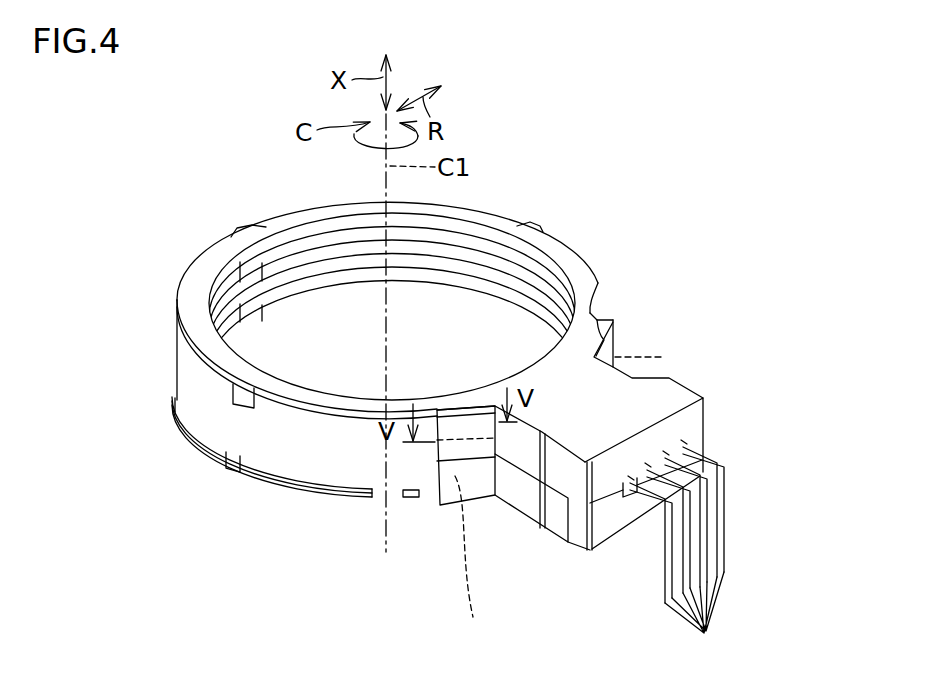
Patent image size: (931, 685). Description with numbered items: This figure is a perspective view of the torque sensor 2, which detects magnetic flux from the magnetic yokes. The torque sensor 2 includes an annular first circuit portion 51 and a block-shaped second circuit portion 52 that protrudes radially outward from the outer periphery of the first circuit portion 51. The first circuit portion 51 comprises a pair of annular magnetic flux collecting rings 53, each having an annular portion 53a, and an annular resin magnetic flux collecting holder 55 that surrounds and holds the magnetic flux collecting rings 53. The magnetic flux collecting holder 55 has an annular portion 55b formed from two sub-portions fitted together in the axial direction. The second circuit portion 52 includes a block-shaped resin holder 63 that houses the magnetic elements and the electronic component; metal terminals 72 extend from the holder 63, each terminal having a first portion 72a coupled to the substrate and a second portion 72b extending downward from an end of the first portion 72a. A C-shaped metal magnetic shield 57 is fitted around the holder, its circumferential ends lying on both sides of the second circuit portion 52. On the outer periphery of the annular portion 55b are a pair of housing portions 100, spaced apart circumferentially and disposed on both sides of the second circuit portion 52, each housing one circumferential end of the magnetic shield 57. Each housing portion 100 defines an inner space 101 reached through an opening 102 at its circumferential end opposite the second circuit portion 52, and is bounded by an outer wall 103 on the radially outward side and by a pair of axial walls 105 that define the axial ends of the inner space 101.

The torque sensor 2 is at (603, 193).
The first circuit portion 51 is at (385, 348).
The second circuit portion 52 is at (699, 474).
The magnetic flux collecting rings 53 is at (315, 290).
The annular portion 53a is at (276, 296).
The magnetic flux collecting holder 55 is at (490, 215).
The annular portion 55b is at (310, 392).
The magnetic shield 57 is at (267, 462).
The holder 63 is at (682, 426).
The terminals 72 is at (734, 554).
The first portion 72a is at (718, 468).
The second portion 72b is at (723, 620).
The housing portions 100 is at (617, 342).
The inner space 101 is at (582, 495).
The opening 102 is at (640, 293).
The outer wall 103 is at (503, 460).
The axial walls 105 is at (597, 298).